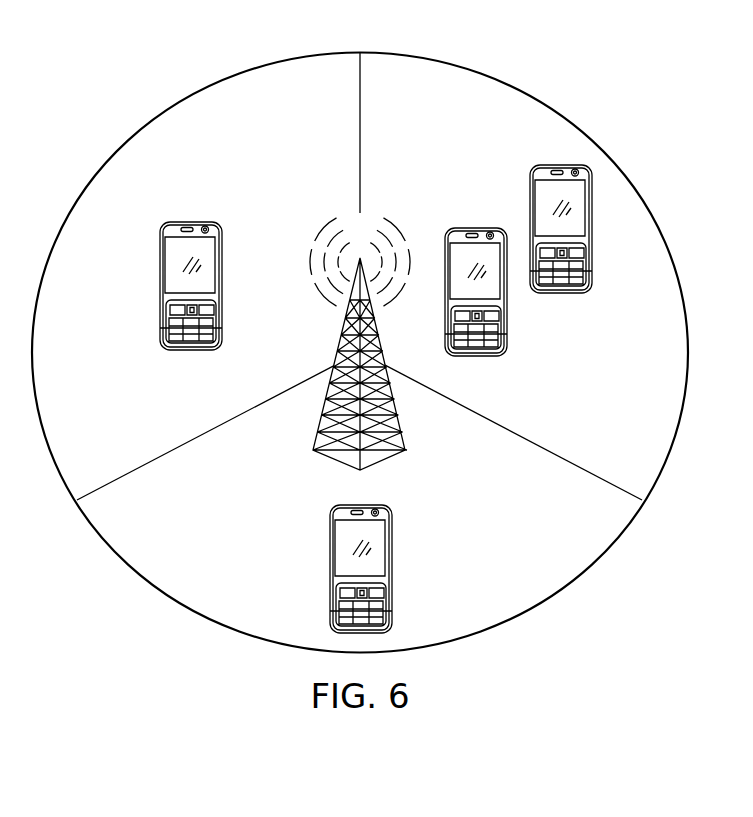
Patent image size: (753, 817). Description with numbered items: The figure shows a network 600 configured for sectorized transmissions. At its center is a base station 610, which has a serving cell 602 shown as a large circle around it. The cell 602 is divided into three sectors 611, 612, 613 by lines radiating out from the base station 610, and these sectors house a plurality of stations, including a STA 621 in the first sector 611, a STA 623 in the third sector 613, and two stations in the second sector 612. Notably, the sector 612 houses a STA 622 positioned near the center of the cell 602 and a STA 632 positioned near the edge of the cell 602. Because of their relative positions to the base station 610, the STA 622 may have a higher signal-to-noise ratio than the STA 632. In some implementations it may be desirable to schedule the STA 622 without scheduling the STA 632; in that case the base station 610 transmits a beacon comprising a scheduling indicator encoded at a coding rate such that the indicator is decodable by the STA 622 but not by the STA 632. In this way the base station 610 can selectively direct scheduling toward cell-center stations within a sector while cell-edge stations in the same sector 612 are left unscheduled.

The network 600 is at (100, 74).
The serving cell 602 is at (557, 101).
The base station 610 is at (338, 345).
The sector 611 is at (292, 125).
The sector 612 is at (475, 124).
The sector 613 is at (504, 548).
The wireless device 621 is at (188, 222).
The STA 622 is at (508, 311).
The STA 623 is at (330, 556).
The STA 632 is at (530, 210).